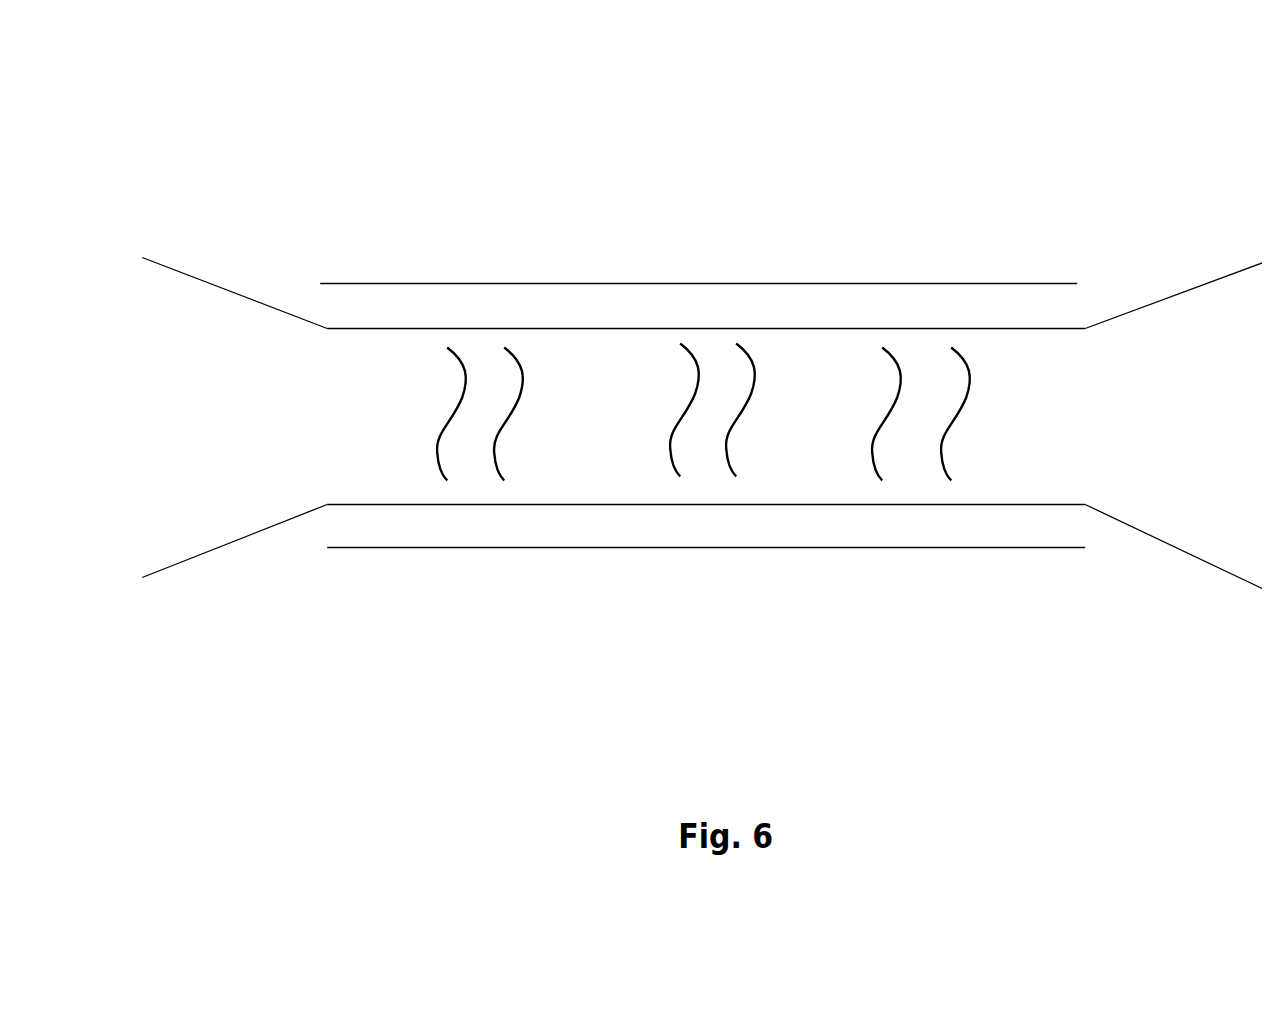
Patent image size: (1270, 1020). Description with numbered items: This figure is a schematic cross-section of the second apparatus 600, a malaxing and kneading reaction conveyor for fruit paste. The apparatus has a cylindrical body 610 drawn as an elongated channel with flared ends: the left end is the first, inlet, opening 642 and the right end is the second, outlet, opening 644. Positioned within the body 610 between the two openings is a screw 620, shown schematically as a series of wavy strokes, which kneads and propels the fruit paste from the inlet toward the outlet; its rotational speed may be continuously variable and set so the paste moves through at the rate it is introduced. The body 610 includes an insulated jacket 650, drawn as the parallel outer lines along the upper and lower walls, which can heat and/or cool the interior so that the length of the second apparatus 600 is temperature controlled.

The second apparatus 600 is at (537, 190).
The cylindrical body 610 is at (819, 504).
The screw 620 is at (672, 440).
The first, inlet, opening 642 is at (265, 310).
The second, outlet, opening 644 is at (1173, 292).
The insulated jacket 650 is at (772, 303).